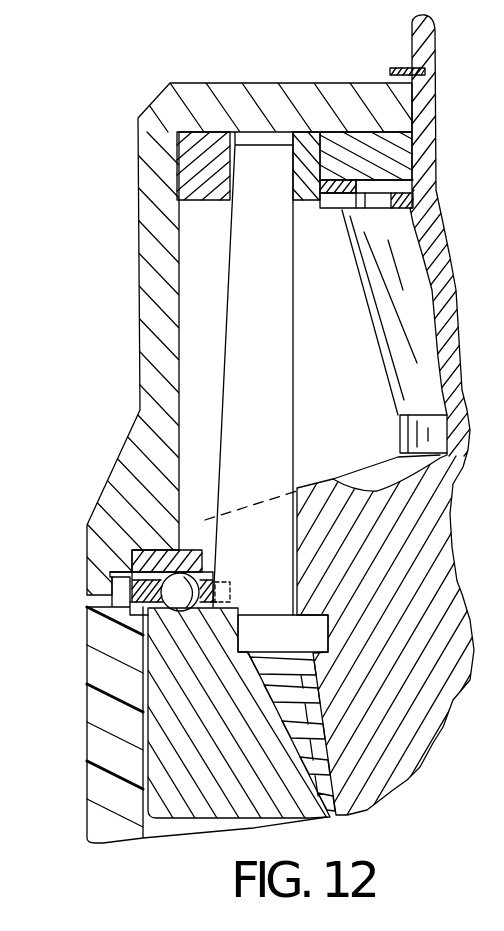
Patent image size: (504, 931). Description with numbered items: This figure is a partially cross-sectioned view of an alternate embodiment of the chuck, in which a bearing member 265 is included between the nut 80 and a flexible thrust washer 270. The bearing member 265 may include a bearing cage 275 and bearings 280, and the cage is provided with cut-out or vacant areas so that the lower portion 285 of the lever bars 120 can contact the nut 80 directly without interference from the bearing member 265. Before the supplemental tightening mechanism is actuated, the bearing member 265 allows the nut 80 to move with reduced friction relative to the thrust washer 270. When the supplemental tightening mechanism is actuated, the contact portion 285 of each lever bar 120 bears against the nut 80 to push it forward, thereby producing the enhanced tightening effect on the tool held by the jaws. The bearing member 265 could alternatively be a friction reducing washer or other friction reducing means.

The nut 80 is at (169, 812).
The lever bars 120 is at (231, 280).
The bearing member 265 is at (127, 610).
The flexible thrust washer 270 is at (138, 588).
The bearing cage 275 is at (130, 580).
The bearings 280 is at (200, 577).
The lower portion 285 is at (206, 619).